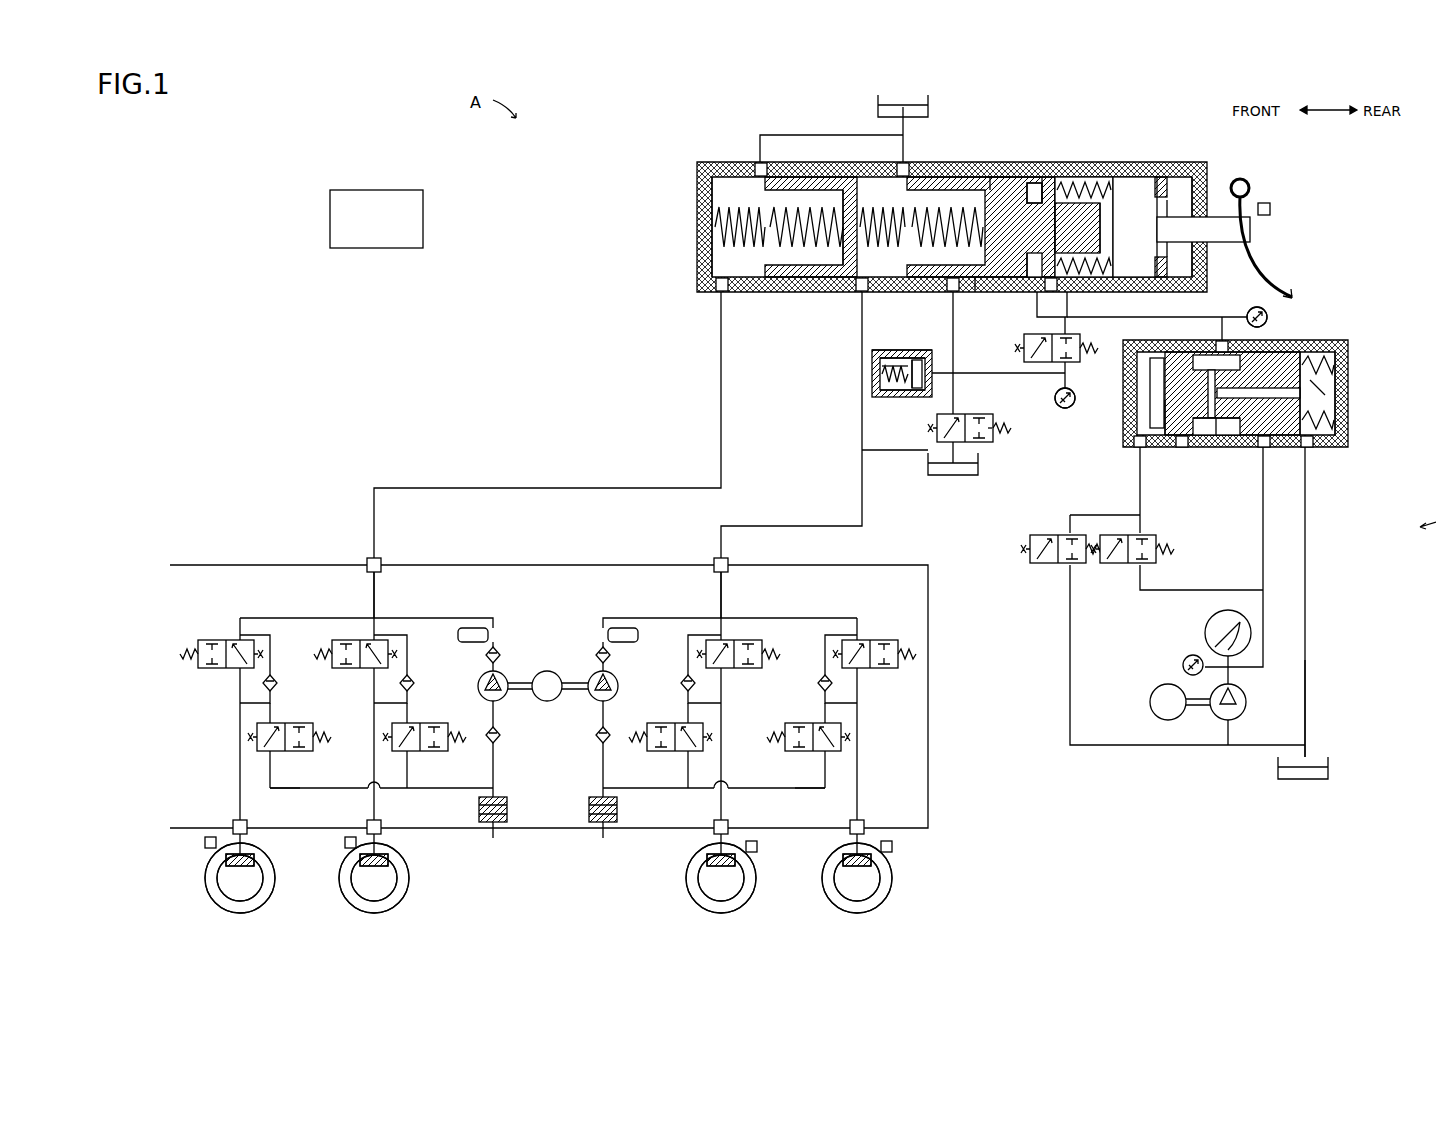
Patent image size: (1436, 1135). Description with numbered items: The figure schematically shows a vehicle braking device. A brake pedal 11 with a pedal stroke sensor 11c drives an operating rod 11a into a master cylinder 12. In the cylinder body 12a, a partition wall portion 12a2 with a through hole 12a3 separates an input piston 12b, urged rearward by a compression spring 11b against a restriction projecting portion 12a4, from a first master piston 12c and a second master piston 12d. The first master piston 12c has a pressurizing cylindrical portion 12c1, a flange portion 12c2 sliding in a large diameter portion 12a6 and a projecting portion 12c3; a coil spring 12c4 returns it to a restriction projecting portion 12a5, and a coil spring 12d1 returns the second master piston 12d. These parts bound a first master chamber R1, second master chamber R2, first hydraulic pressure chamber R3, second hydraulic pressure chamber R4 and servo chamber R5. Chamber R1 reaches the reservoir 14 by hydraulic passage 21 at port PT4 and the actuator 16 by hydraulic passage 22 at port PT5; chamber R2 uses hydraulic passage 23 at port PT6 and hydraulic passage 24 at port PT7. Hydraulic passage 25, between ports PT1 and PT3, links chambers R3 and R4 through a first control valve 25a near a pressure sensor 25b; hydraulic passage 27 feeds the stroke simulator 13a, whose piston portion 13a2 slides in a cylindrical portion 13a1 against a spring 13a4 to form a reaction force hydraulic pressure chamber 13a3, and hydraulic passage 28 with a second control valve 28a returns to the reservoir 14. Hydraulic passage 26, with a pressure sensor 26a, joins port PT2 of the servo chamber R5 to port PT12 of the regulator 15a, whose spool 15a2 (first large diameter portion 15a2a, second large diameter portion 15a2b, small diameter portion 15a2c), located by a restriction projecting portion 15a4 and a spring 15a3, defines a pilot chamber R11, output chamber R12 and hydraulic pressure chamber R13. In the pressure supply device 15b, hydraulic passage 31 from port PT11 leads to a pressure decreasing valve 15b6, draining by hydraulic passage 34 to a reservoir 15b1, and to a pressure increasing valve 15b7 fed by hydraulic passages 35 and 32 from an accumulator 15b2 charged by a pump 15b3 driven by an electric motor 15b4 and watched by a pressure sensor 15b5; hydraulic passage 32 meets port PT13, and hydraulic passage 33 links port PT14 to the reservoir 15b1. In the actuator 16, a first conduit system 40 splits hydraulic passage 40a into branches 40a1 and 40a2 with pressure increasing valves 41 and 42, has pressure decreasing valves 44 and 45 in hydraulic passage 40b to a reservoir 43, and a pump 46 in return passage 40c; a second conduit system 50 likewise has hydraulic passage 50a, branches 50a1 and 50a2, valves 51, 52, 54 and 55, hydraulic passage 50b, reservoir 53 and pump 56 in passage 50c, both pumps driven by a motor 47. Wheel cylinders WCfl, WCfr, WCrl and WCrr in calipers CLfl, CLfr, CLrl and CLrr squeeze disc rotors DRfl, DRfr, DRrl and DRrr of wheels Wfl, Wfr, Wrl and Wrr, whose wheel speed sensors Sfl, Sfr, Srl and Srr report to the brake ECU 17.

The brake pedal 11 is at (1258, 256).
The operating rod 11a is at (1248, 230).
The compression spring 11b is at (1080, 182).
The pedal stroke sensor 11c is at (1270, 209).
The master cylinder 12 is at (693, 186).
The cylinder body 12a is at (700, 222).
The partition wall portion 12a2 is at (1057, 180).
The through hole 12a3 is at (1062, 180).
The restriction projecting portion 12a4 is at (1165, 178).
The restriction projecting portion 12a5 is at (1044, 180).
The large diameter portion 12a6 is at (955, 178).
The input piston 12b is at (1140, 185).
The first master piston 12c is at (945, 285).
The pressurizing cylindrical portion 12c1 is at (933, 160).
The flange portion 12c2 is at (1030, 180).
The projecting portion 12c3 is at (1108, 178).
The coil spring 12c4 is at (900, 339).
The second master piston 12d is at (795, 285).
The coil spring 12d1 is at (810, 296).
The stroke simulator 13a is at (893, 411).
The cylindrical portion 13a1 is at (885, 386).
The piston portion 13a2 is at (880, 392).
The reaction force hydraulic pressure chamber 13a3 is at (882, 360).
The spring 13a4 is at (888, 372).
The reservoir 14 is at (878, 118).
The regulator 15a is at (1358, 404).
The spool 15a2 is at (1300, 380).
The first large diameter portion 15a2a is at (1295, 450).
The second large diameter portion 15a2b is at (1172, 452).
The small diameter portion 15a2c is at (1208, 448).
The spring 15a3 is at (1320, 340).
The restriction projecting portion 15a4 is at (1176, 445).
The pressure supply device 15b is at (1333, 620).
The reservoir 15b1 is at (1330, 770).
The accumulator 15b2 is at (1205, 640).
The pump 15b3 is at (1244, 698).
The electric motor 15b4 is at (1150, 704).
The pressure sensor 15b5 is at (1182, 668).
The pressure decreasing valve 15b6 is at (1052, 568).
The pressure increasing valve 15b7 is at (1120, 568).
The actuator 16 is at (848, 562).
The brake ECU 17 is at (383, 190).
The hydraulic passage 21 is at (895, 128).
The hydraulic passage 22 is at (792, 524).
The hydraulic passage 23 is at (785, 134).
The hydraulic passage 24 is at (536, 486).
The hydraulic passage 25 is at (1056, 392).
The first control valve 25a is at (1080, 346).
The pressure sensor 25b is at (1075, 394).
The hydraulic passage 26 is at (1205, 317).
The pressure sensor 26a is at (1268, 316).
The hydraulic passage 27 is at (940, 380).
The hydraulic passage 28 is at (962, 398).
The second control valve 28a is at (990, 430).
The hydraulic passage 31 is at (1138, 512).
The hydraulic passage 32 is at (1265, 580).
The hydraulic passage 33 is at (1308, 675).
The hydraulic passage 34 is at (1068, 650).
The hydraulic passage 35 is at (1192, 588).
The first conduit system 40 is at (822, 601).
The hydraulic passage 40a is at (724, 610).
The branched hydraulic passage 40a1 is at (723, 720).
The branched hydraulic passage 40a2 is at (859, 720).
The hydraulic passage 40b is at (752, 786).
The hydraulic passage 40c is at (606, 730).
The first pressure increasing control valve 41 is at (762, 650).
The second pressure increasing valve 42 is at (864, 640).
The reservoir 43 is at (606, 838).
The first pressure decreasing control valve 44 is at (670, 722).
The first pressure decreasing control valve 45 is at (810, 722).
The pump 46 is at (612, 682).
The motor 47 is at (549, 671).
The second conduit system 50 is at (244, 601).
The hydraulic passage 50a is at (372, 602).
The branched hydraulic passage 50a1 is at (372, 720).
The branched hydraulic passage 50a2 is at (238, 720).
The hydraulic passage 50b is at (342, 786).
The hydraulic passage 50c is at (490, 728).
The first pressure increasing control valve 51 is at (332, 650).
The second pressure increasing valve 52 is at (232, 640).
The reservoir 53 is at (490, 838).
The second pressure decreasing control valve 54 is at (424, 722).
The second pressure decreasing control valve 55 is at (284, 722).
The pump 56 is at (478, 682).
The port PT1 is at (1067, 298).
The port PT2 is at (1032, 348).
The port PT3 is at (952, 295).
The port PT4 is at (900, 160).
The port PT5 is at (858, 295).
The port PT6 is at (758, 160).
The port PT7 is at (718, 295).
The port PT11 is at (1134, 446).
The port PT12 is at (1218, 334).
The port PT13 is at (1290, 470).
The port PT14 is at (1312, 448).
The first master chamber R1 is at (884, 290).
The second master chamber R2 is at (752, 293).
The first hydraulic pressure chamber R3 is at (1153, 256).
The second hydraulic pressure chamber R4 is at (977, 295).
The servo chamber R5 is at (1032, 290).
The pilot chamber R11 is at (1140, 415).
The output chamber R12 is at (1238, 440).
The hydraulic pressure chamber R13 is at (1320, 415).
The left front wheel Wfl is at (215, 913).
The right front wheel Wfr is at (350, 913).
The left rear wheel Wrl is at (742, 910).
The right rear wheel Wrr is at (880, 910).
The wheel cylinder WCfl is at (210, 874).
The wheel cylinder WCfr is at (345, 874).
The wheel cylinder WCrl is at (744, 876).
The wheel cylinder WCrr is at (880, 876).
The caliper CLfl is at (226, 860).
The caliper CLfr is at (360, 860).
The caliper CLrl is at (735, 862).
The caliper CLrr is at (871, 862).
The disc rotor DRfl is at (215, 888).
The disc rotor DRfr is at (350, 888).
The disc rotor DRrl is at (746, 890).
The disc rotor DRrr is at (882, 890).
The wheel speed sensor Sfl is at (205, 842).
The wheel speed sensor Sfr is at (345, 842).
The wheel speed sensor Srl is at (757, 846).
The wheel speed sensor Srr is at (892, 846).